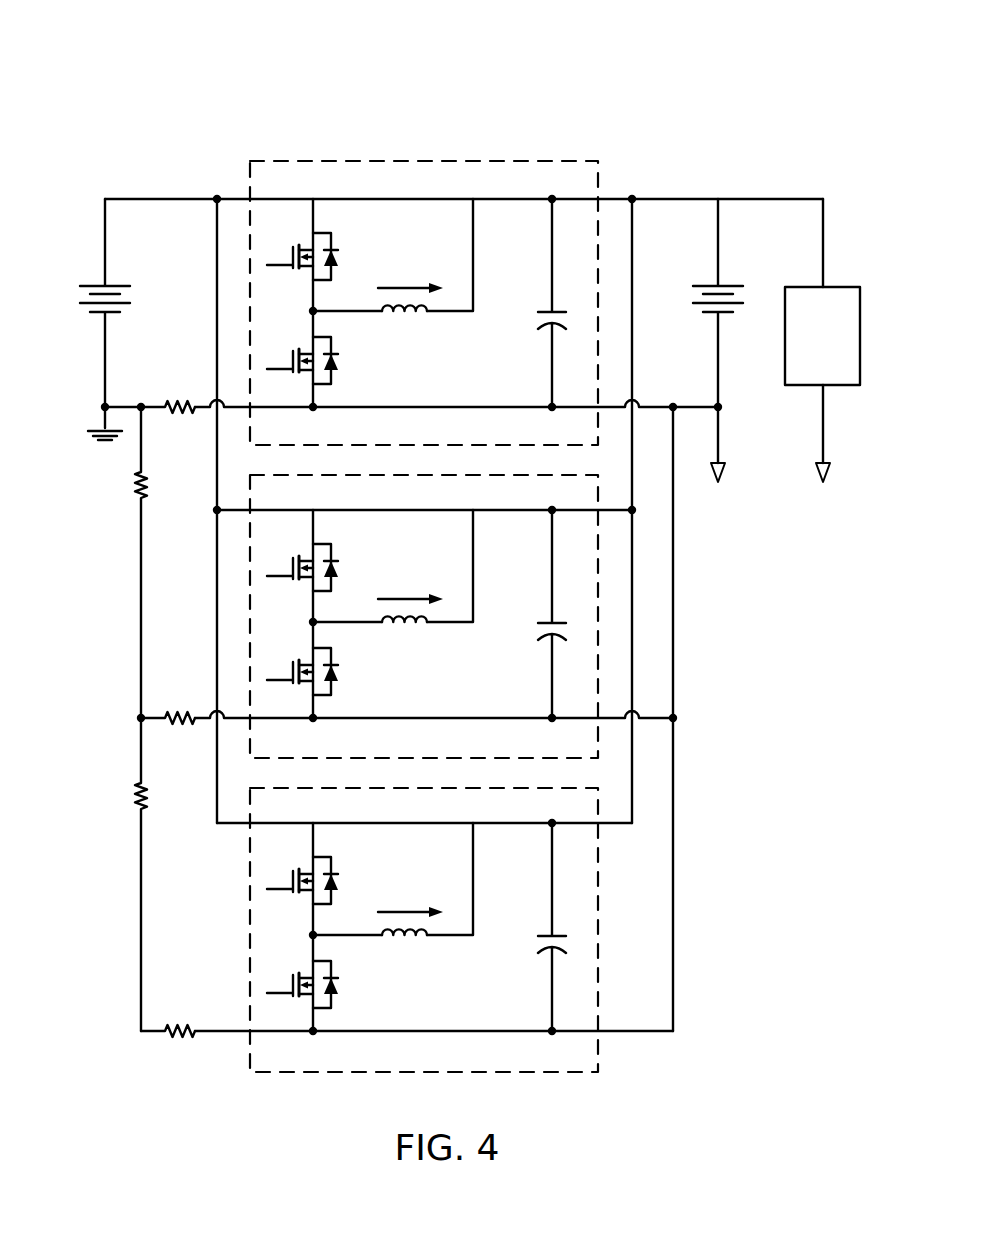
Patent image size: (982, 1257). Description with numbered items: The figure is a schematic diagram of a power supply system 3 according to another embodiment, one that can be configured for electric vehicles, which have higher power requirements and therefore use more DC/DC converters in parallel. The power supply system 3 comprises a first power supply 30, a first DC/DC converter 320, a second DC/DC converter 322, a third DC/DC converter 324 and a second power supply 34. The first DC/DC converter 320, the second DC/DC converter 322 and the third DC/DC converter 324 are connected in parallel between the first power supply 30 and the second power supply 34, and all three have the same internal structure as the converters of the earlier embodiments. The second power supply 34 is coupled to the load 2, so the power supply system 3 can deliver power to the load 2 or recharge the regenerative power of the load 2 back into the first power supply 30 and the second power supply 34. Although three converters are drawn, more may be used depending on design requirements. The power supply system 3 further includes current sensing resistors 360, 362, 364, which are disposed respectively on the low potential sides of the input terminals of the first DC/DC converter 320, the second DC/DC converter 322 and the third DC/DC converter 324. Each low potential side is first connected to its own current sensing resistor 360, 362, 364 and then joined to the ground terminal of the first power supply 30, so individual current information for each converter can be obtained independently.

The power supply system 3 is at (412, 86).
The first power supply 30 is at (93, 285).
The second power supply 34 is at (710, 285).
The load 2 is at (814, 285).
The first DC/DC converter 320 is at (290, 160).
The second DC/DC converter 322 is at (598, 574).
The third DC/DC converter 324 is at (598, 912).
The current sensing resistor 360 is at (178, 400).
The current sensing resistor 362 is at (183, 713).
The current sensing resistor 364 is at (183, 1027).